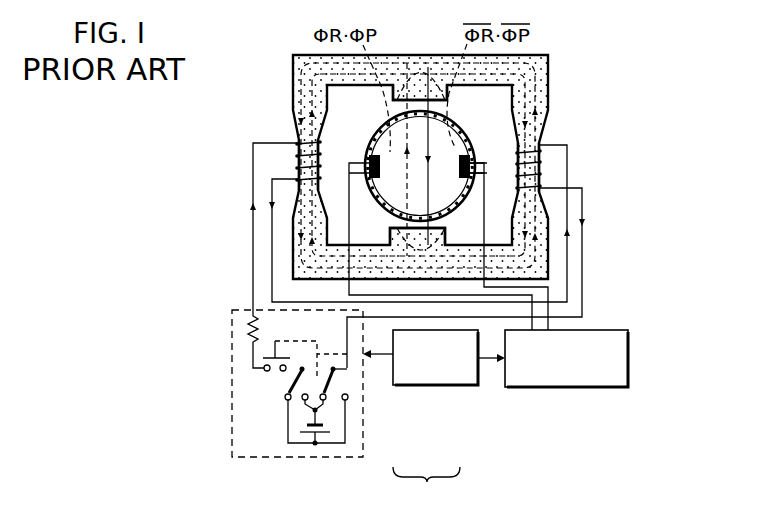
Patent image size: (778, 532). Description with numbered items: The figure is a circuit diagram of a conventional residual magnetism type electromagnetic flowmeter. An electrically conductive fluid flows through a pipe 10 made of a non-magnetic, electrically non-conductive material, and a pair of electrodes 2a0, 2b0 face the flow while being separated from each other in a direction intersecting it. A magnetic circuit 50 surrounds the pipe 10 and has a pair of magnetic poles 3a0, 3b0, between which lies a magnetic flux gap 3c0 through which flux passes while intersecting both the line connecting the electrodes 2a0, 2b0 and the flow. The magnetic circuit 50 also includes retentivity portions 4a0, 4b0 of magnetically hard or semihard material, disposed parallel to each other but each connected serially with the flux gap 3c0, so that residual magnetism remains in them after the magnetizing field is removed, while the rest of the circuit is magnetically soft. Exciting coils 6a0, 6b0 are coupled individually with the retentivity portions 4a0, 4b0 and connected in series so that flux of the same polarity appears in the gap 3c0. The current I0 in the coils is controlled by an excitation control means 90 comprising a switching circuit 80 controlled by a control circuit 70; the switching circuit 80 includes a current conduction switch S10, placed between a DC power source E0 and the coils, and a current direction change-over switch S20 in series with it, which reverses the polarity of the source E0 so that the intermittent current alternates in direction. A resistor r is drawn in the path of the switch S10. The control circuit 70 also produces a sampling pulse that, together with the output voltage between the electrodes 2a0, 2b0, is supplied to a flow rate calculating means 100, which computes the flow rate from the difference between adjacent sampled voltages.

The pipe 10 is at (441, 140).
The electrode 2a0 is at (377, 159).
The electrode 2b0 is at (465, 159).
The magnetic pole 3a0 is at (443, 95).
The magnetic pole 3b0 is at (446, 229).
The magnetic flux gap 3c0 is at (487, 166).
The retentivity portion 4a0 is at (298, 140).
The retentivity portion 4b0 is at (540, 143).
The magnetic circuit 50 is at (408, 58).
The exciting coil 6a0 is at (297, 153).
The exciting coil 6b0 is at (539, 170).
The current I0 is at (253, 246).
The control circuit 70 is at (415, 386).
The switching circuit 80 is at (364, 428).
The excitation control means 90 is at (426, 489).
The flow rate calculating means 100 is at (523, 388).
The current conduction switch S10 is at (268, 372).
The current direction change-over switch S20 is at (334, 382).
The DC power source E0 is at (328, 433).
The resistor r is at (258, 340).